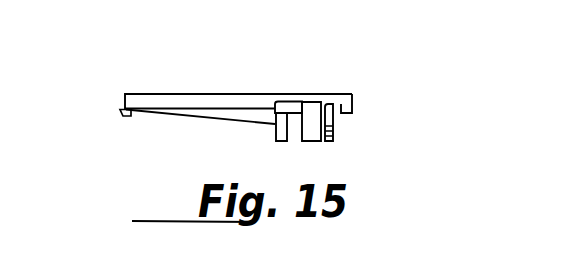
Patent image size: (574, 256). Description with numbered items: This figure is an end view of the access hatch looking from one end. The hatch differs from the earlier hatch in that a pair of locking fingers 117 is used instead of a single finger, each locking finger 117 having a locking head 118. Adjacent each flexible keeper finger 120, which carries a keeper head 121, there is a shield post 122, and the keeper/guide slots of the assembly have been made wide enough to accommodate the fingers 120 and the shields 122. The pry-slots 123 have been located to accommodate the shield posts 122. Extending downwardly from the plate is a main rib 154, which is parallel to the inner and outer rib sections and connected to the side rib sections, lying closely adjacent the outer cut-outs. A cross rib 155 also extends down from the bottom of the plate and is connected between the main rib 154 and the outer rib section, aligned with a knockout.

The locking finger 117 is at (123, 107).
The locking head 118 is at (123, 116).
The cross rib 155 is at (251, 119).
The pry-slot 123 is at (286, 108).
The main rib 154 is at (281, 138).
The shield post 122 is at (311, 126).
The keeper head 121 is at (339, 137).
The flexible keeper finger 120 is at (334, 119).